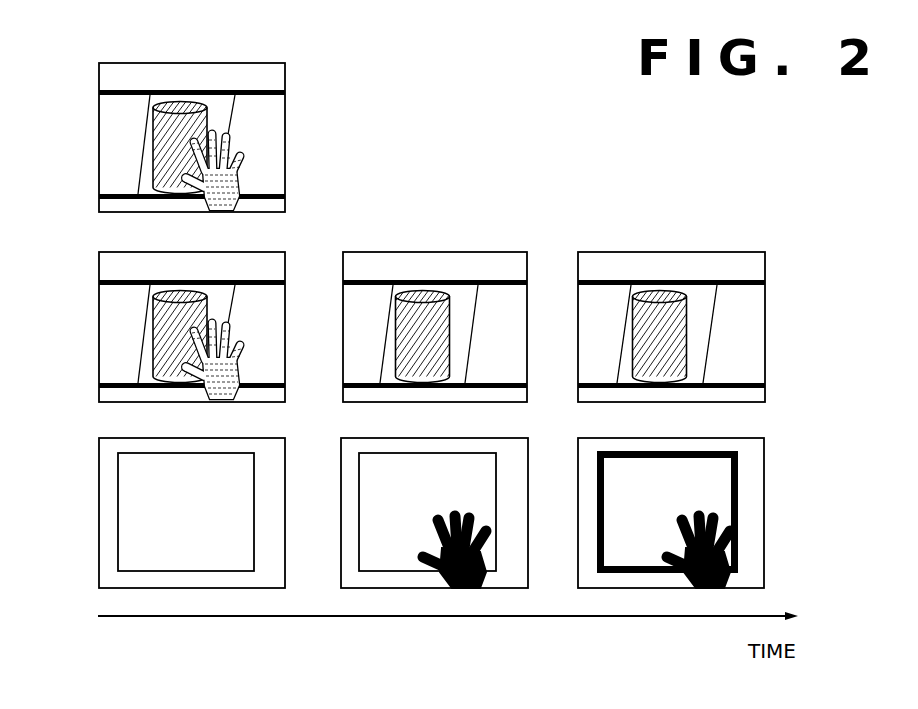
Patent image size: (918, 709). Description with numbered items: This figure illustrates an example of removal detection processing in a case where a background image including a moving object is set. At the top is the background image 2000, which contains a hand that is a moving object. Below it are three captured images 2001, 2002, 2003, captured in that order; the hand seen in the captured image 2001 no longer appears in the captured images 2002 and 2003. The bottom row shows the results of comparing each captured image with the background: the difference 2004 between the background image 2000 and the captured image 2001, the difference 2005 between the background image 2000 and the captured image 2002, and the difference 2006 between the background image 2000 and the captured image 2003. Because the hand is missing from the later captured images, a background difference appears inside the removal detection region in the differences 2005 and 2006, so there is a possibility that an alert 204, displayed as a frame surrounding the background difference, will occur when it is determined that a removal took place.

The background image 2000 is at (217, 122).
The captured image 2001 is at (213, 312).
The captured image 2002 is at (445, 252).
The captured image 2003 is at (683, 252).
The difference 2004 is at (167, 497).
The difference 2005 is at (436, 497).
The difference 2006 is at (705, 497).
The alert 204 is at (738, 470).